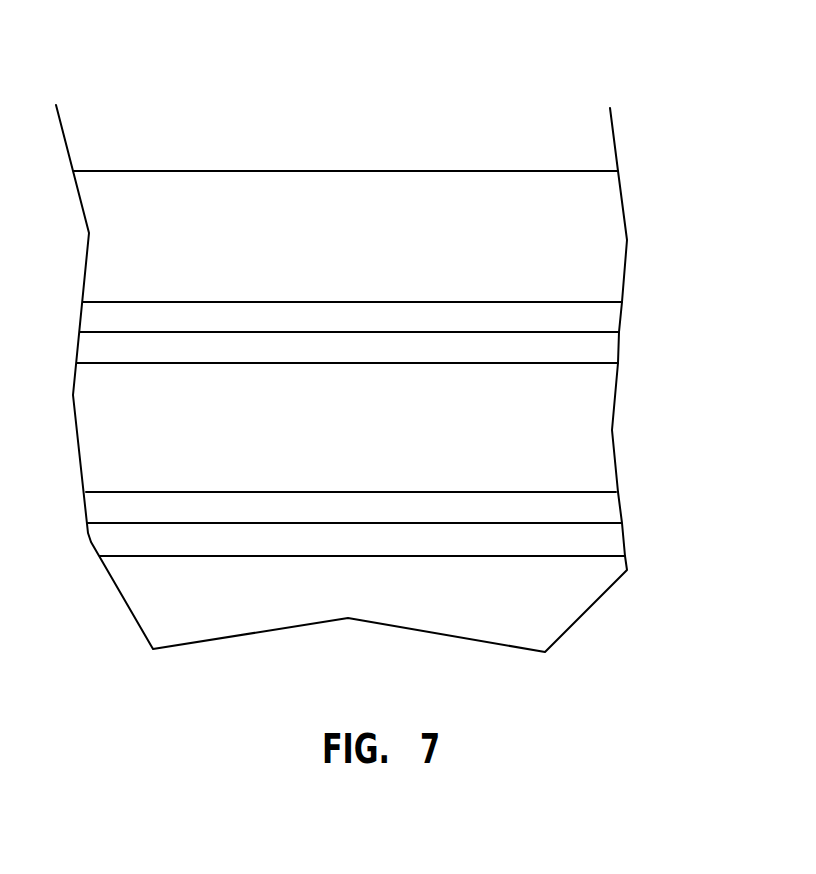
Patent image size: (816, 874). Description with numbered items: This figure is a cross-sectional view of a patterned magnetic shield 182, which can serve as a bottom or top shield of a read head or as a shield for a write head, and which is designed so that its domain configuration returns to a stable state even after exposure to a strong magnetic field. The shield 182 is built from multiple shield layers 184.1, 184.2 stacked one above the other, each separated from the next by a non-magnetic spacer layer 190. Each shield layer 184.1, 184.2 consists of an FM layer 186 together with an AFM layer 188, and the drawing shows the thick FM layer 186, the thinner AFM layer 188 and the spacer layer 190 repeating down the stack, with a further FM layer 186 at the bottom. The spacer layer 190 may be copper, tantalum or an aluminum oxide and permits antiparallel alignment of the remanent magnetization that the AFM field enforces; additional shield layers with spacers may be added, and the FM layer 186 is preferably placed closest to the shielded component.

The patterned shield 182 is at (563, 125).
The shield layer 184.1 is at (643, 327).
The shield layer 184.2 is at (643, 517).
The FM layer 186 is at (560, 214).
The AFM layer 188 is at (550, 328).
The non-magnetic spacer layer 190 is at (512, 360).